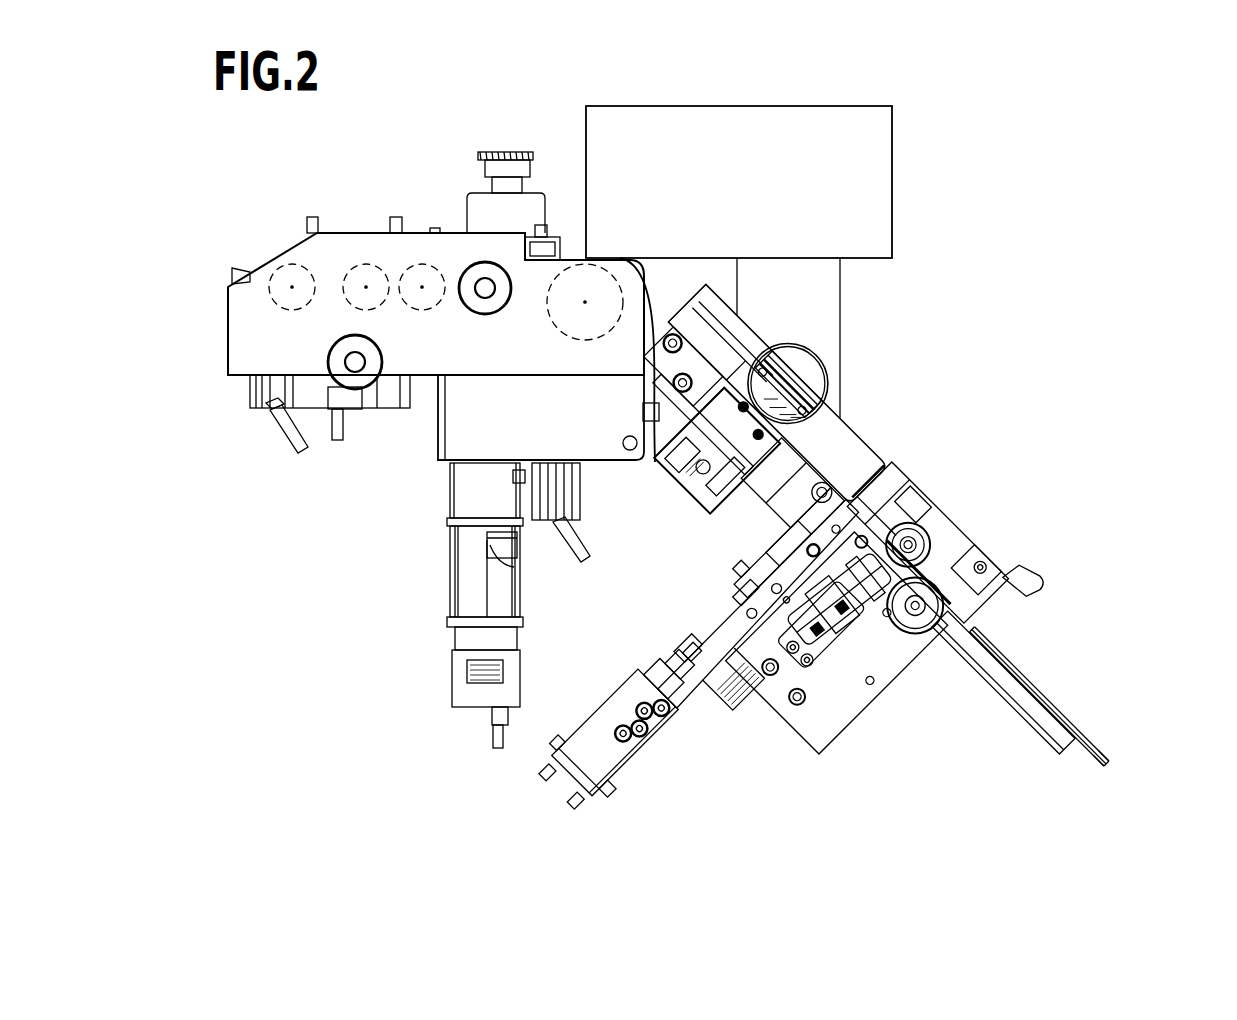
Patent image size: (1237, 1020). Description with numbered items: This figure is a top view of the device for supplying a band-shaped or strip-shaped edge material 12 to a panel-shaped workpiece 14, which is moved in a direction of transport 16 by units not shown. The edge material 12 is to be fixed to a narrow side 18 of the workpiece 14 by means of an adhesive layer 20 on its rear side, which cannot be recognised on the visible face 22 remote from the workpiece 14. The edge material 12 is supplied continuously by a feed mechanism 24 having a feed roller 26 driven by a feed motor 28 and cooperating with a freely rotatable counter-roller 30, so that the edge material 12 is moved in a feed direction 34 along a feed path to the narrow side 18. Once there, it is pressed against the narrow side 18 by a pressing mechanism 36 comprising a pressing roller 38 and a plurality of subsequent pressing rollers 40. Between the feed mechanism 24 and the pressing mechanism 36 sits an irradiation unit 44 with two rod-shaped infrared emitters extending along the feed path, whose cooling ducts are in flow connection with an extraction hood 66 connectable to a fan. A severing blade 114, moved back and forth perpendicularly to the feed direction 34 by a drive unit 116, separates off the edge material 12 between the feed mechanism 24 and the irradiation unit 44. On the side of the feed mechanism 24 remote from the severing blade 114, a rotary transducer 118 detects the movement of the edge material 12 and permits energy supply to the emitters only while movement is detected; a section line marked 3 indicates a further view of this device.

The edge material 12 is at (987, 680).
The workpiece 14 is at (739, 182).
The direction of transport 16 is at (914, 183).
The narrow side 18 is at (862, 262).
The adhesive layer 20 is at (1080, 738).
The visible face 22 is at (1080, 745).
The feed mechanism 24 is at (852, 654).
The feed roller 26 is at (960, 563).
The feed motor 28 is at (790, 668).
The counter-roller 30 is at (935, 553).
The feed direction 34 is at (1124, 786).
The pressing mechanism 36 is at (462, 245).
The pressing roller 38 is at (548, 318).
The subsequent pressing rollers 40 is at (420, 283).
The irradiation unit 44 is at (878, 421).
The extraction hood 66 is at (855, 402).
The severing blade 114 is at (776, 532).
The drive unit 116 is at (596, 742).
The rotary transducer 118 is at (925, 640).
The section line 3 is at (845, 398).